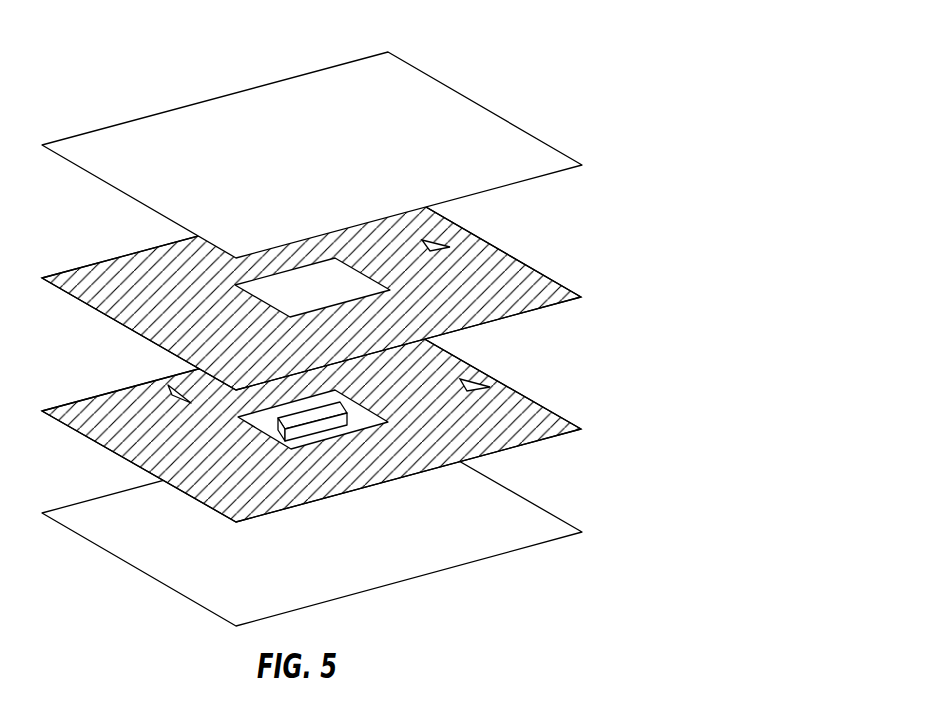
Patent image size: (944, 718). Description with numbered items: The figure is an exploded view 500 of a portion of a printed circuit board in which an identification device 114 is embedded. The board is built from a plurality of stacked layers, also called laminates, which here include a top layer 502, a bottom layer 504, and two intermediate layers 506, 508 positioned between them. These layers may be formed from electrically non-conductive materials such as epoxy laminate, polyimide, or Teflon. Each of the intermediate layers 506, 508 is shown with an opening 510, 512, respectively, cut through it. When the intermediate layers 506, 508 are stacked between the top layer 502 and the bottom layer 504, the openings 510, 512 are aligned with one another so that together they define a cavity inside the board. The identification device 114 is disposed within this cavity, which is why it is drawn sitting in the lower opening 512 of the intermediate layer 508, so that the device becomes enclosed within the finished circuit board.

The exploded view 500 is at (332, 314).
The top layer 502 is at (553, 162).
The bottom layer 504 is at (566, 530).
The intermediate layer 506 is at (566, 288).
The intermediate layer 508 is at (566, 420).
The opening 510 is at (320, 283).
The opening 512 is at (358, 425).
The identification device 114 is at (168, 386).